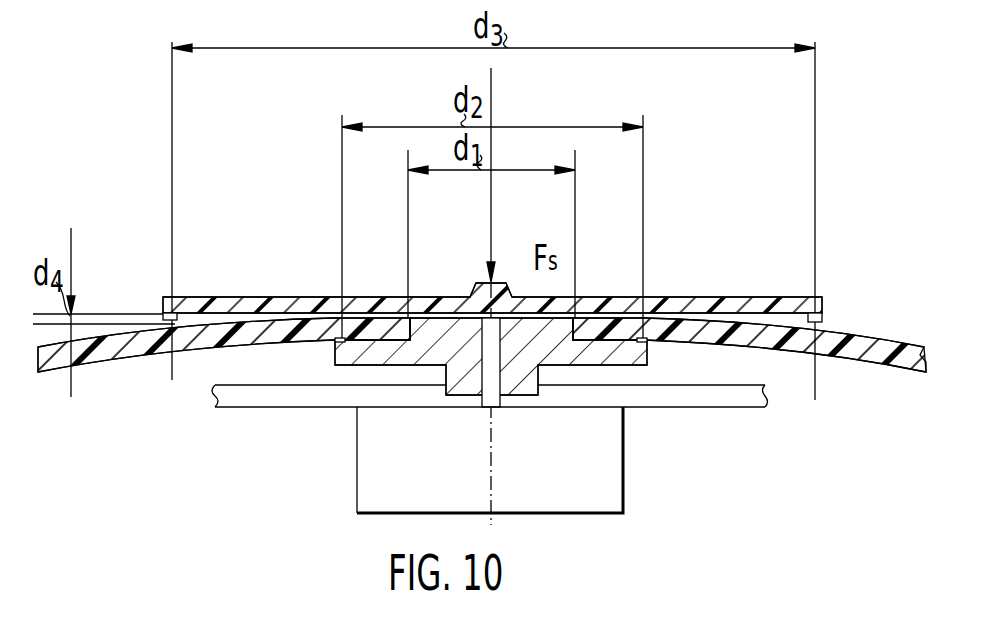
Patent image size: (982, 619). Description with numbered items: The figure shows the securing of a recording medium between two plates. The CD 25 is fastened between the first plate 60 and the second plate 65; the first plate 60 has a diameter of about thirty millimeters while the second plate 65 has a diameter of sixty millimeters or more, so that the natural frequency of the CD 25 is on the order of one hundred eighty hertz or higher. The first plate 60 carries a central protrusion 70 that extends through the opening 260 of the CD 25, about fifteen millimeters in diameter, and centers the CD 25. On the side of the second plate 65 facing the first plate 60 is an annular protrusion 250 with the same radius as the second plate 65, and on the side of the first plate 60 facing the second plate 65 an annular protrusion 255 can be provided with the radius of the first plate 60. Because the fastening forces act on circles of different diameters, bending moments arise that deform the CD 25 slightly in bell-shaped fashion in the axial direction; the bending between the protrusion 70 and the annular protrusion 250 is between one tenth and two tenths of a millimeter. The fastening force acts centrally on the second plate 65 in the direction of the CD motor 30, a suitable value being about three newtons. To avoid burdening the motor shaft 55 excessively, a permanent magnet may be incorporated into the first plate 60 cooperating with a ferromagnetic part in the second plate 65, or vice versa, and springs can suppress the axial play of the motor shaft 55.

The CD 25 is at (850, 340).
The CD motor 30 is at (380, 468).
The motor shaft 55 is at (496, 406).
The first plate 60 is at (625, 358).
The second plate 65 is at (691, 306).
The protrusion 70 is at (544, 332).
The annular protrusion 250 is at (164, 317).
The annular protrusion 255 is at (335, 349).
The opening 260 is at (408, 320).